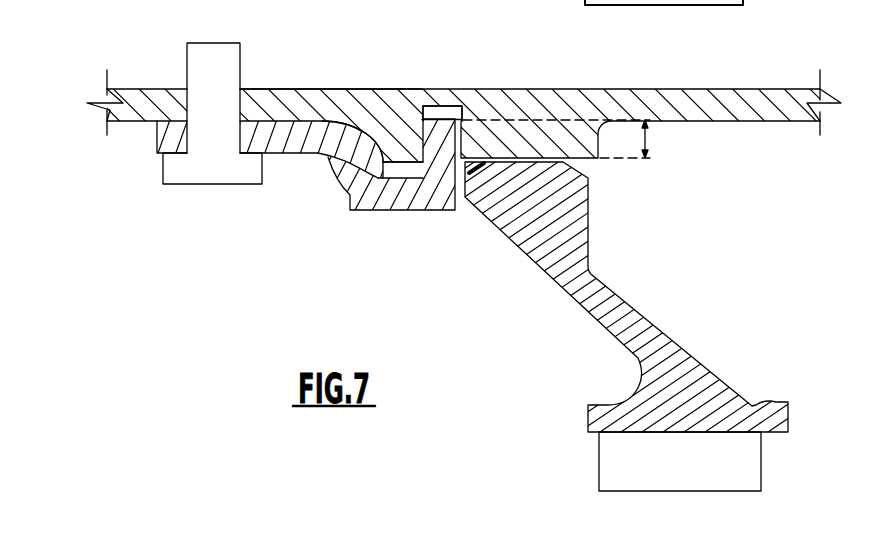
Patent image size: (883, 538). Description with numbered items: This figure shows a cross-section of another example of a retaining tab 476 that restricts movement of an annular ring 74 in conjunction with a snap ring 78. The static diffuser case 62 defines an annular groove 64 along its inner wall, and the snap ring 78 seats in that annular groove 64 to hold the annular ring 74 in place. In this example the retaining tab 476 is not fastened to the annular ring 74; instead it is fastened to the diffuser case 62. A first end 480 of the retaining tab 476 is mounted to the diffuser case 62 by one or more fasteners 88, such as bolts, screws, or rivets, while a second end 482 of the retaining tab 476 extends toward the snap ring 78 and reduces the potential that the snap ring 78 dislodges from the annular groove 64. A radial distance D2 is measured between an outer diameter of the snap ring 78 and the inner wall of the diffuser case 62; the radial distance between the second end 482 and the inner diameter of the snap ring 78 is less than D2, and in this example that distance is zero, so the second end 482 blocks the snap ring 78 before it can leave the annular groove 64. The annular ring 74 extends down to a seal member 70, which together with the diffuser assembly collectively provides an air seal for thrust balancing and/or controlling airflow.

The diffuser case 62 is at (563, 112).
The annular groove 64 is at (448, 112).
The seal member 70 is at (742, 465).
The annular ring 74 is at (655, 318).
The snap ring 78 is at (395, 92).
The fasteners 88 is at (202, 175).
The retaining tab 476 is at (343, 157).
The first end 480 is at (158, 143).
The second end 482 is at (433, 197).
The radial distance D2 is at (661, 139).